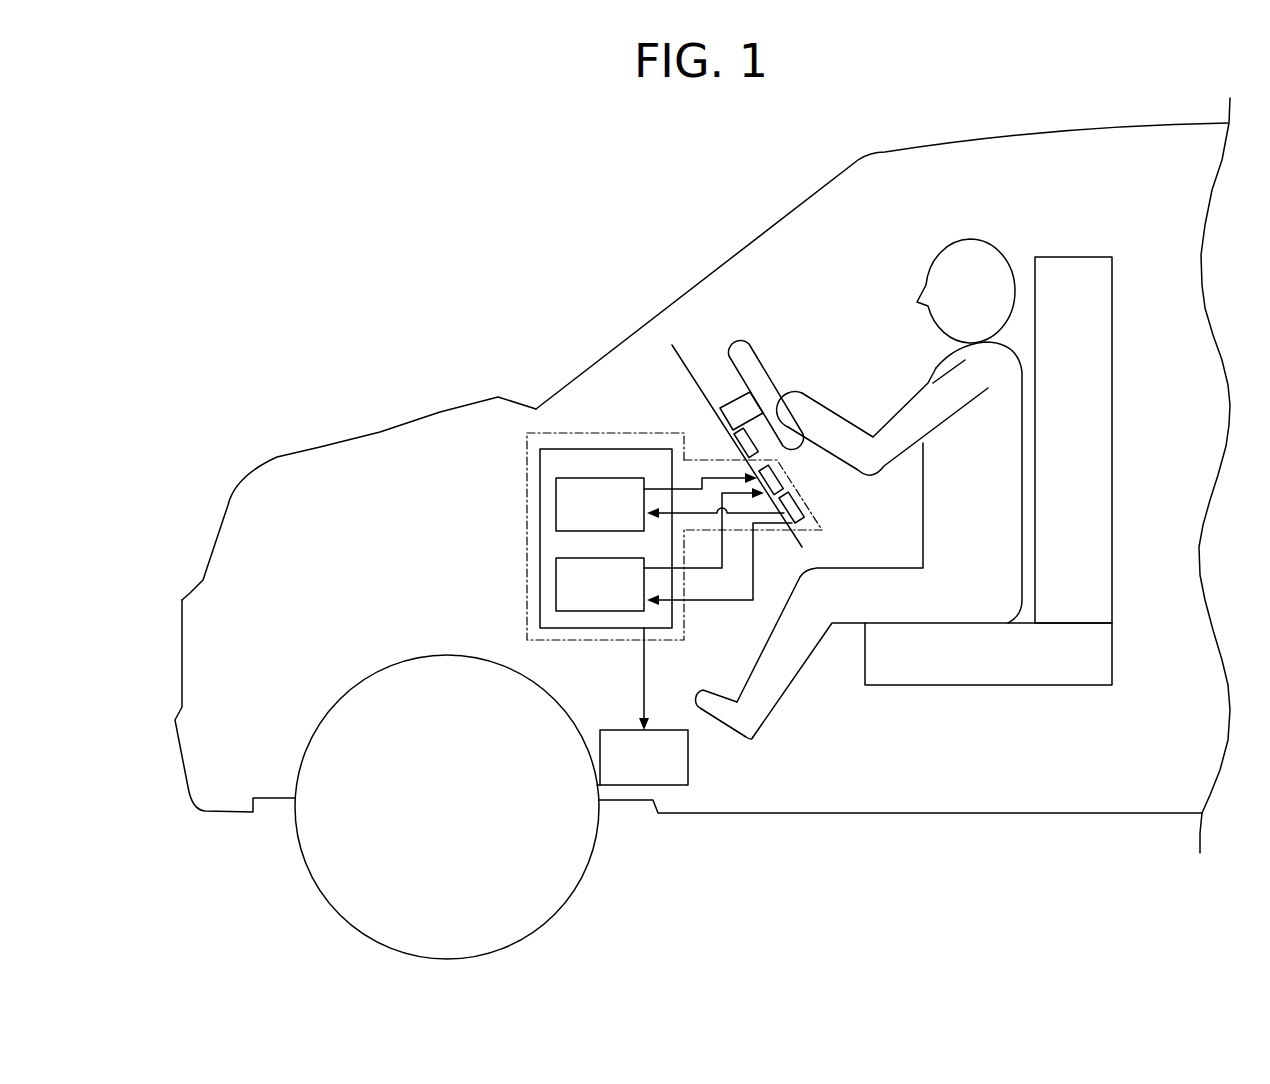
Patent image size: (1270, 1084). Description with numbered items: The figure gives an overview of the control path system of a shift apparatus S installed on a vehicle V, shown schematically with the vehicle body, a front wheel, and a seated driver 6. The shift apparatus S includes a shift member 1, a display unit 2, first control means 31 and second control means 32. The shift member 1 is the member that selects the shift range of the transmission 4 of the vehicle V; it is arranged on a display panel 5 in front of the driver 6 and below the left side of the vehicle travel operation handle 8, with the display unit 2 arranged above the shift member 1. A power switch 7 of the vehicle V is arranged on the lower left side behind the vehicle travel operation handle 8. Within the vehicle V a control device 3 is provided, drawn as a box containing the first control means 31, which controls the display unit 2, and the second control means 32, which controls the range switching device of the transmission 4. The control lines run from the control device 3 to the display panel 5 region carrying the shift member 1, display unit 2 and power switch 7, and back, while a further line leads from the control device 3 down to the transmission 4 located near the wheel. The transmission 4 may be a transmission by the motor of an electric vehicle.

The shift member 1 is at (805, 513).
The display unit 2 is at (781, 478).
The control device 3 is at (540, 538).
The first control means 31 is at (600, 478).
The second control means 32 is at (600, 558).
The transmission 4 is at (688, 757).
The display panel 5 is at (841, 495).
The driver 6 is at (983, 237).
The power switch 7 is at (760, 449).
The vehicle travel operation handle 8 is at (753, 331).
The shift apparatus S is at (606, 433).
The vehicle V is at (772, 143).